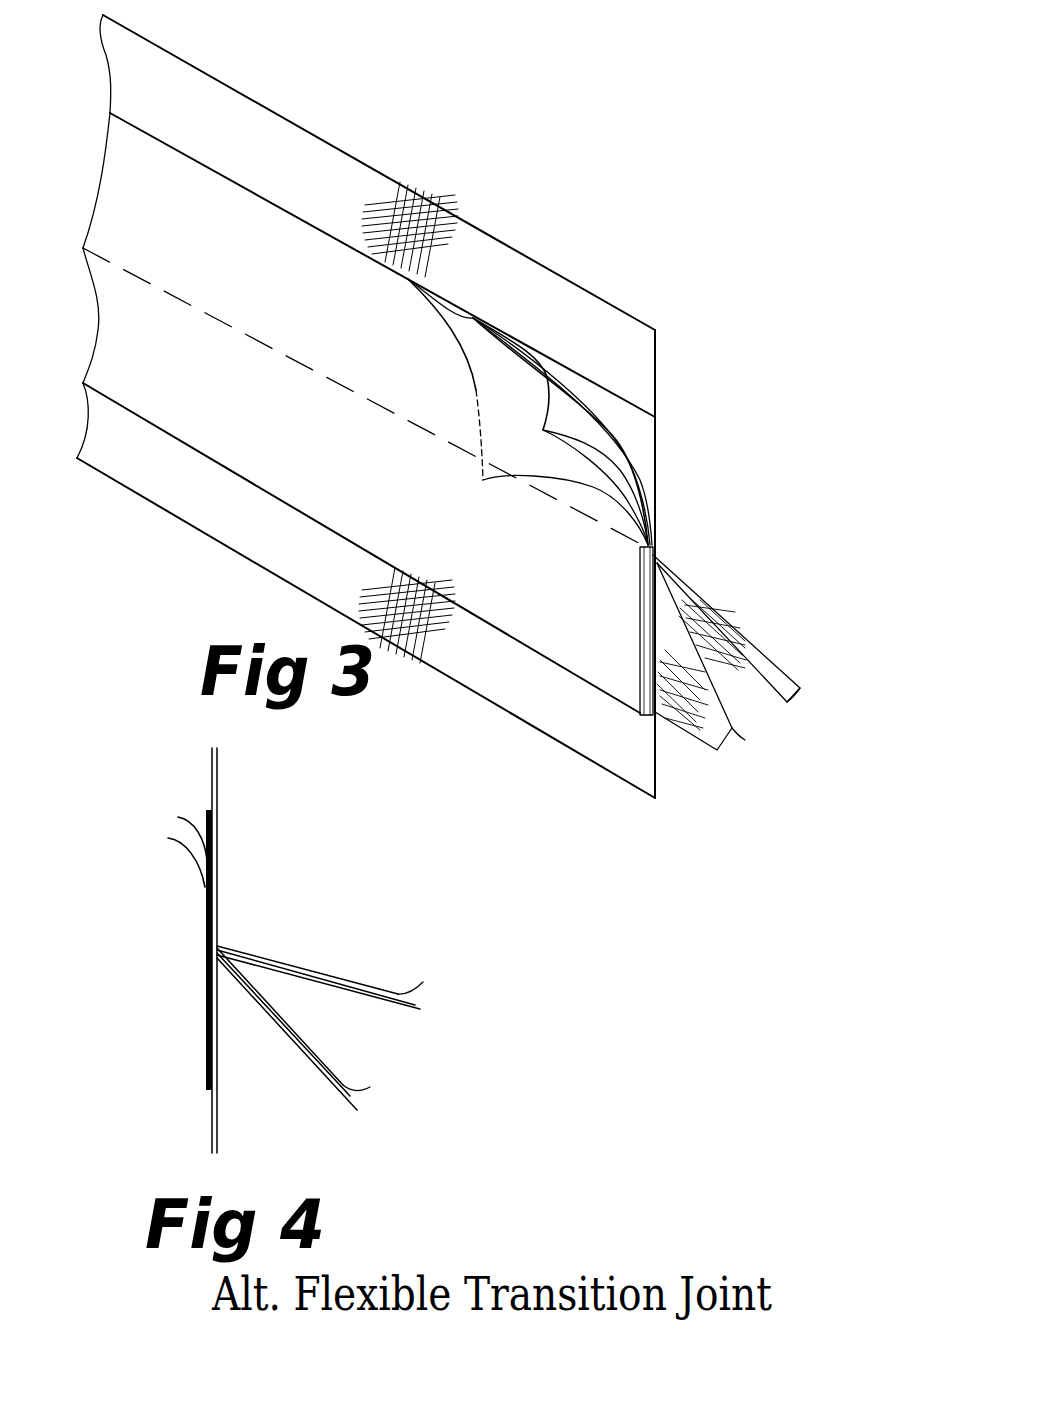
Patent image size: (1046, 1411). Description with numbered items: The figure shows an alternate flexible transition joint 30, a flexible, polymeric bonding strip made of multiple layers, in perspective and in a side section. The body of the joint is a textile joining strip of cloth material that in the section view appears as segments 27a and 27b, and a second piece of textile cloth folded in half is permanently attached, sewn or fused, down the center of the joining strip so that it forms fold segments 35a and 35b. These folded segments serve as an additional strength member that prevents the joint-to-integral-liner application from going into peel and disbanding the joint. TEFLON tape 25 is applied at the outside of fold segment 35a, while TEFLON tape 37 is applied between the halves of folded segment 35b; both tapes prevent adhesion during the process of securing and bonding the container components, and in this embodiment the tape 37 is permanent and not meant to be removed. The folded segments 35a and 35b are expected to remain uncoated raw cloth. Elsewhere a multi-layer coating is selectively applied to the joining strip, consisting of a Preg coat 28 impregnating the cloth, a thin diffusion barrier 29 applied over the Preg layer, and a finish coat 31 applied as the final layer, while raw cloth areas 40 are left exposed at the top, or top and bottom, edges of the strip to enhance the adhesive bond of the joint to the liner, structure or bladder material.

In FIG. 3, the TEFLON tape 25 is at (738, 625).
In FIG. 4, the TEFLON tape 25 is at (410, 967).
In FIG. 3, the joining strip segment 27a is at (552, 292).
In FIG. 4, the joining strip segment 27a is at (217, 770).
In FIG. 3, the joining strip segment 27b is at (583, 735).
In FIG. 4, the joining strip segment 27b is at (215, 1127).
In FIG. 3, the Preg coat 28 is at (632, 418).
In FIG. 4, the Preg coat 28 is at (203, 815).
In FIG. 3, the diffusion barrier 29 is at (577, 427).
In FIG. 4, the diffusion barrier 29 is at (178, 817).
In FIG. 3, the flexible transition joint 30 is at (345, 388).
In FIG. 3, the finish coat 31 is at (508, 455).
In FIG. 4, the finish coat 31 is at (180, 848).
In FIG. 3, the fold segment 35a is at (795, 703).
In FIG. 4, the fold segment 35a is at (452, 1008).
In FIG. 3, the fold segment 35b is at (737, 763).
In FIG. 4, the fold segment 35b is at (353, 1107).
In FIG. 3, the TEFLON tape 37 is at (722, 732).
In FIG. 4, the TEFLON tape 37 is at (372, 1088).
In FIG. 3, the raw cloth area 40 is at (298, 185).